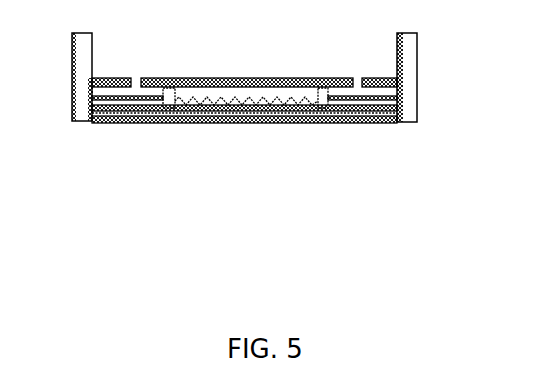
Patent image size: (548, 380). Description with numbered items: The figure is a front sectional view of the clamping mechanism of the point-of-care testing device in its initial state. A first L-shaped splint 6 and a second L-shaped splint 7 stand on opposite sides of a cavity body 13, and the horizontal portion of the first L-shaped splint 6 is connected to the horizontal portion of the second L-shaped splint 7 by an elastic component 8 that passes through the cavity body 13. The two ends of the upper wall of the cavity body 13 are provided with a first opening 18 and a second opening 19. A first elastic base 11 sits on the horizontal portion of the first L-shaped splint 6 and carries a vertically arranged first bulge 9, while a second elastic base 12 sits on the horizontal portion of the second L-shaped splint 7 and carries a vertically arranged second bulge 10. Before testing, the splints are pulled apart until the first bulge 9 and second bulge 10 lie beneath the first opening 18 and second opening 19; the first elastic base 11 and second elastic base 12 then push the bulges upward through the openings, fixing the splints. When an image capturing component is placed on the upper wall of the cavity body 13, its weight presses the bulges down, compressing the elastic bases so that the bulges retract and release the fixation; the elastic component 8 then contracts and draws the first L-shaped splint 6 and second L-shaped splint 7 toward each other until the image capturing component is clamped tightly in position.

The first L-shaped splint 6 is at (81, 77).
The second L-shaped splint 7 is at (408, 83).
The elastic component 8 is at (238, 107).
The first bulge 9 is at (175, 108).
The second bulge 10 is at (317, 112).
The first elastic base 11 is at (135, 104).
The second elastic base 12 is at (355, 103).
The cavity body 13 is at (382, 123).
The first opening 18 is at (135, 77).
The second opening 19 is at (355, 78).